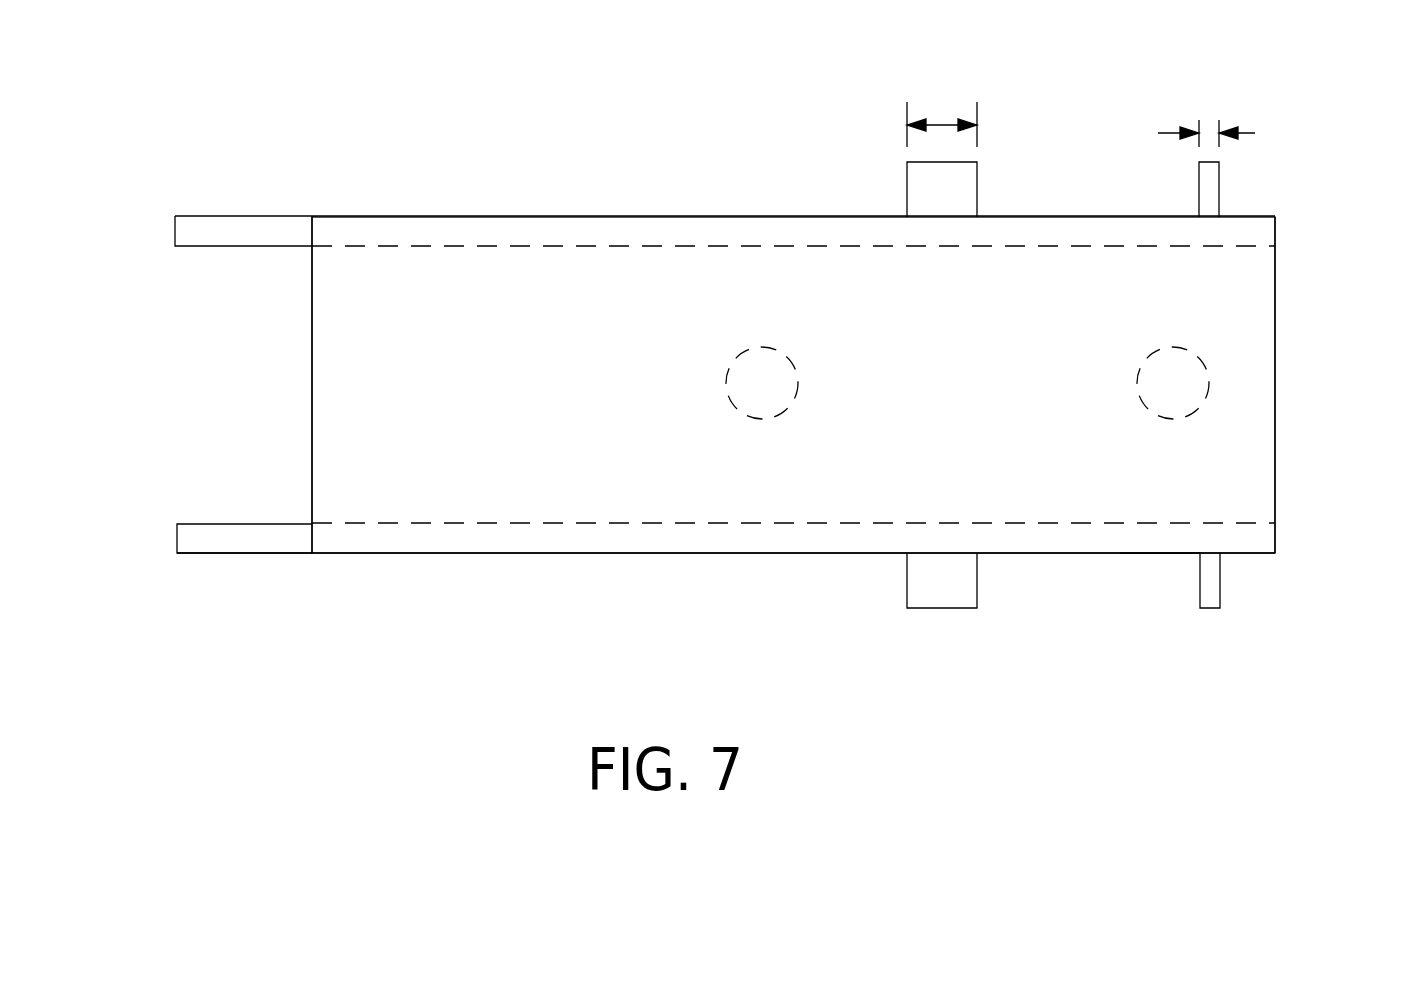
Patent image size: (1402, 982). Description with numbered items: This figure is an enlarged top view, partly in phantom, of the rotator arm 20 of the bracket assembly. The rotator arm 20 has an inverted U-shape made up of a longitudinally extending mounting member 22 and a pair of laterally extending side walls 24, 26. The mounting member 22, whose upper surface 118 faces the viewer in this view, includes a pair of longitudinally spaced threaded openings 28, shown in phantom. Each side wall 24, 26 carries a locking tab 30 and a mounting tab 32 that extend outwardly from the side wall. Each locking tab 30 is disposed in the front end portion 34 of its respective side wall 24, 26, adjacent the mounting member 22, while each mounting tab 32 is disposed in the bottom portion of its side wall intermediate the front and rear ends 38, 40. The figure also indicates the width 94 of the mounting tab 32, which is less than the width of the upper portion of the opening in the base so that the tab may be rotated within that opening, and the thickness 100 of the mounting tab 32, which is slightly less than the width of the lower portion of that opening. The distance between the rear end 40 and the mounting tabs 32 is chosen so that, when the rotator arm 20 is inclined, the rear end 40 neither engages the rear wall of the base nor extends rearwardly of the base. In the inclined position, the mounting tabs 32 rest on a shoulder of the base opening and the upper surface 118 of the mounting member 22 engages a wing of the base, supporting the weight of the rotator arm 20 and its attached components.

The rotator arm 20 is at (513, 178).
The mounting member 22 is at (312, 392).
The side wall 24 is at (492, 538).
The side wall 26 is at (630, 228).
The threaded openings 28 is at (775, 370).
The locking tab 30 is at (1214, 205).
The mounting tab 32 is at (942, 200).
The front end portion 34 is at (1162, 536).
The front end 38 is at (1275, 387).
The rear end 40 is at (175, 538).
The width of the mounting tab 94 is at (940, 120).
The thickness of the mounting tab 100 is at (1208, 125).
The upper surface of the mounting member 118 is at (525, 408).